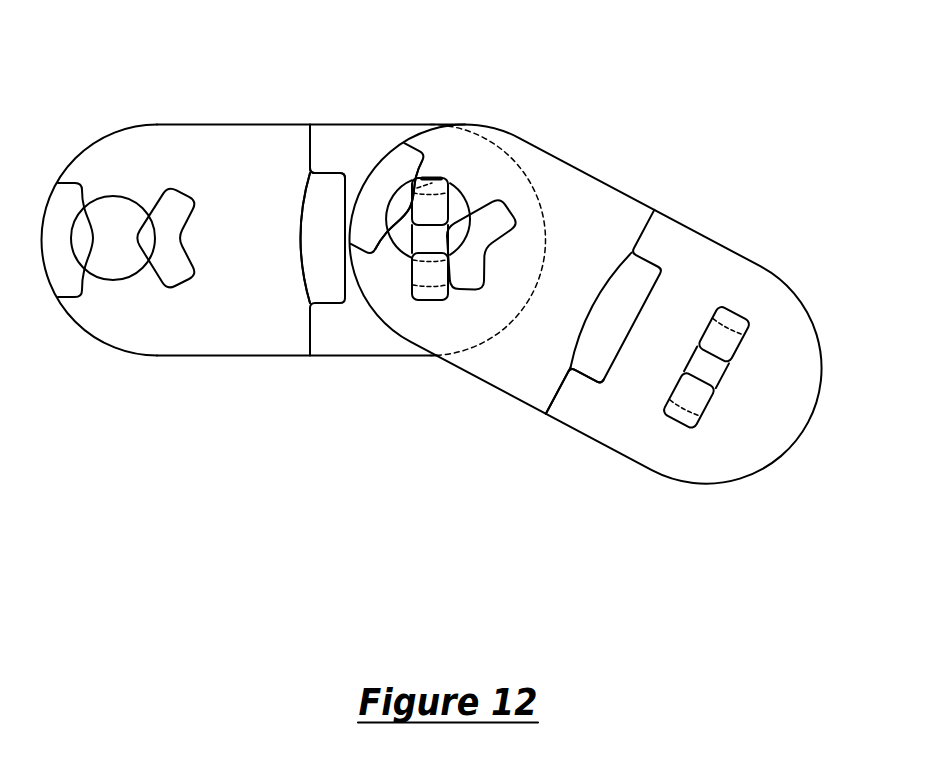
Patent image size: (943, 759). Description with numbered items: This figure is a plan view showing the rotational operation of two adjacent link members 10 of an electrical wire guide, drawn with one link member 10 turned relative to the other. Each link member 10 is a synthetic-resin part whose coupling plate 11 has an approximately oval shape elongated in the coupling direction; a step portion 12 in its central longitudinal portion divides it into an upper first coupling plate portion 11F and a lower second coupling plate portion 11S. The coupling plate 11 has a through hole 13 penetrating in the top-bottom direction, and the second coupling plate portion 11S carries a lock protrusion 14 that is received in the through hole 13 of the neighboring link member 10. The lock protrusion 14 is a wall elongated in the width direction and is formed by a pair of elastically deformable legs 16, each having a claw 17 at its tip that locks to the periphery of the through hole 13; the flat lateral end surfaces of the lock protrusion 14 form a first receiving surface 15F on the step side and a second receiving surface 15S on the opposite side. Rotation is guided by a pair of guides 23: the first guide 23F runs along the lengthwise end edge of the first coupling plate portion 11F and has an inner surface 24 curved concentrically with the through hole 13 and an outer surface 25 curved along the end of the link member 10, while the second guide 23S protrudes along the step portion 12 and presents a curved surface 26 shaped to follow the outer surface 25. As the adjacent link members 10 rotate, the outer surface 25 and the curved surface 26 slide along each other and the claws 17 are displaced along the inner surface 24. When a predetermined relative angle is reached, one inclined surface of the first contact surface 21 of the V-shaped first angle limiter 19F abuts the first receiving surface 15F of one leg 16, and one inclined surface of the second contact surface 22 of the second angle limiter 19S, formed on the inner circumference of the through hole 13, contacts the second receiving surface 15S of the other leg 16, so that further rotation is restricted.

The link member 10 is at (240, 157).
The coupling plate 11 is at (478, 473).
The first coupling plate portion 11F is at (495, 366).
The second coupling plate portion 11S is at (597, 428).
The step portion 12 is at (290, 140).
The through hole 13 is at (460, 197).
The lock protrusion 14 is at (437, 203).
The second receiving surface 15S is at (412, 205).
The first receiving surface 15F is at (437, 268).
The leg 16 is at (411, 238).
The claw 17 is at (423, 288).
The second angle limiter 19S is at (405, 222).
The first angle limiter 19F is at (527, 195).
The first contact surface 21 is at (428, 300).
The second contact surface 22 is at (438, 176).
The pair of guides 23 is at (296, 428).
The second guide 23S is at (310, 245).
The first guide 23F is at (373, 225).
The inner surface 24 is at (405, 262).
The outer surface 25 is at (327, 170).
The curved surface 26 is at (345, 207).